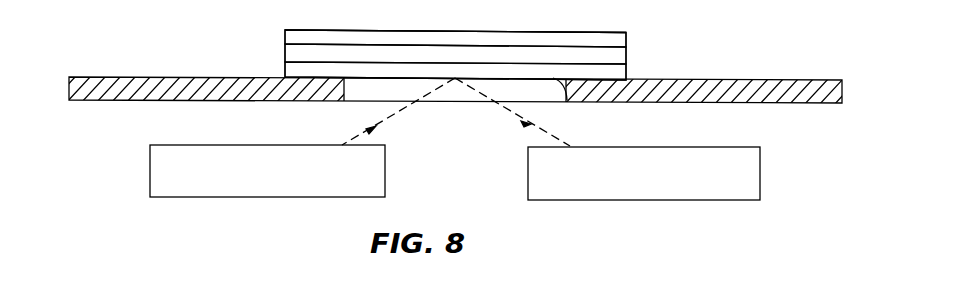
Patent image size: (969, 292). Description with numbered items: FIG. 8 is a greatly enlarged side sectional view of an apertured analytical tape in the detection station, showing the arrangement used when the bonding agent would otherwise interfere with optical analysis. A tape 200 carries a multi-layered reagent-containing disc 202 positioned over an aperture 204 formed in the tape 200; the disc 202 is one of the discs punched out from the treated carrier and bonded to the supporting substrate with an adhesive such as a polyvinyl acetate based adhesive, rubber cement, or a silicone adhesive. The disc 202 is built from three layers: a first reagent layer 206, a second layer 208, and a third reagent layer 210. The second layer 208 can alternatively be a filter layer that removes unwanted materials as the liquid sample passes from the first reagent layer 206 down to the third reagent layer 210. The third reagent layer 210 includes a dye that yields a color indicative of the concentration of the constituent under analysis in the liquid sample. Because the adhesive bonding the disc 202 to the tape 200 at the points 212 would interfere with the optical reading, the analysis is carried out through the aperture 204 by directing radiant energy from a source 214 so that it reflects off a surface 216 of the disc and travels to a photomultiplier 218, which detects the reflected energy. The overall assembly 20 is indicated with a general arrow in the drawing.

The sensing device assembly 20 is at (466, 45).
The tape 200 is at (69, 88).
The multi-layered reagent-containing disc 202 is at (286, 30).
The aperture 204 is at (358, 93).
The first reagent layer 206 is at (285, 40).
The second layer 208 is at (626, 55).
The third reagent layer 210 is at (626, 70).
The points 212 is at (300, 80).
The source 214 is at (254, 198).
The surface 216 is at (567, 100).
The photomultiplier 218 is at (656, 201).